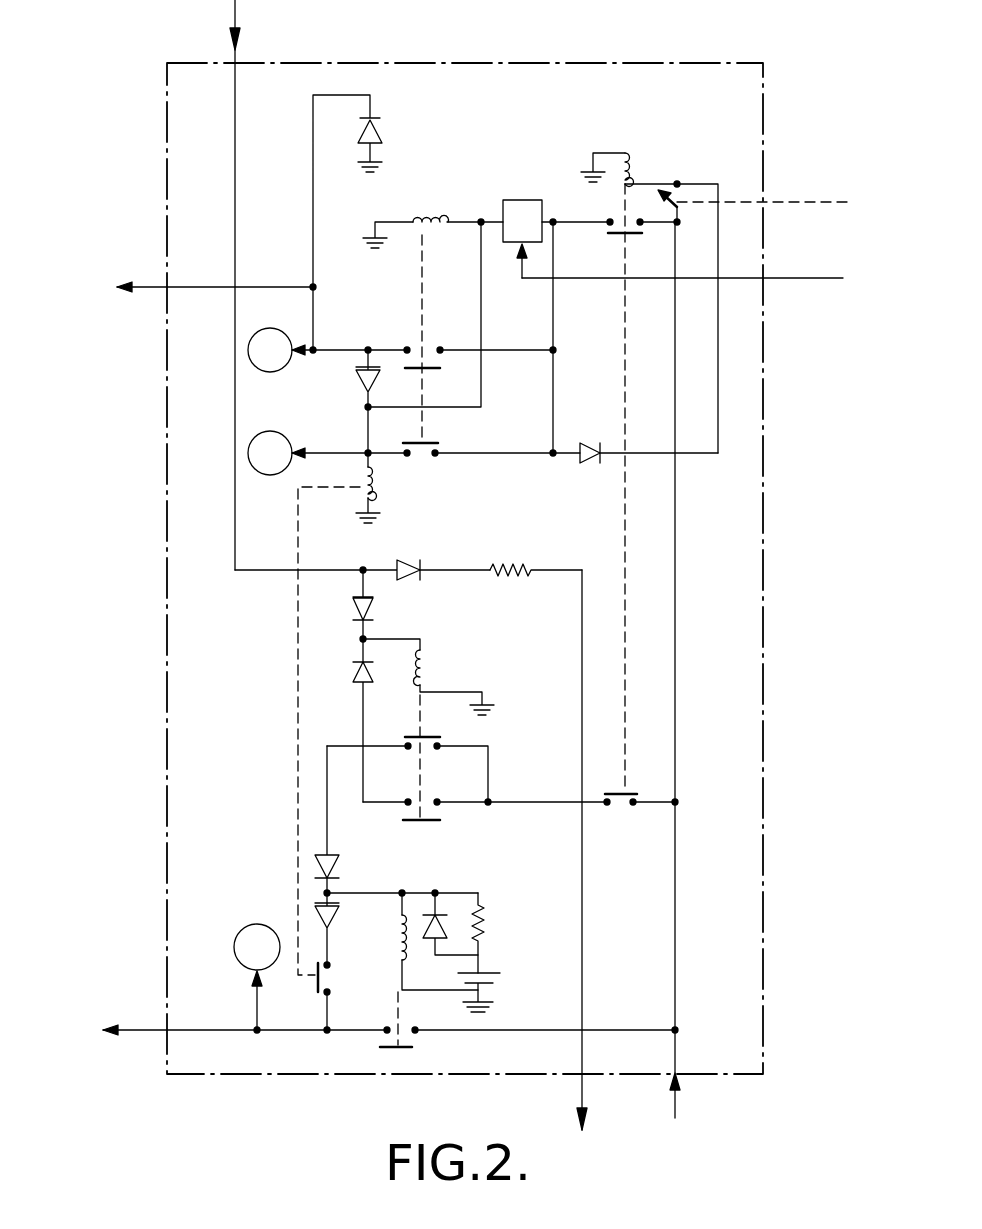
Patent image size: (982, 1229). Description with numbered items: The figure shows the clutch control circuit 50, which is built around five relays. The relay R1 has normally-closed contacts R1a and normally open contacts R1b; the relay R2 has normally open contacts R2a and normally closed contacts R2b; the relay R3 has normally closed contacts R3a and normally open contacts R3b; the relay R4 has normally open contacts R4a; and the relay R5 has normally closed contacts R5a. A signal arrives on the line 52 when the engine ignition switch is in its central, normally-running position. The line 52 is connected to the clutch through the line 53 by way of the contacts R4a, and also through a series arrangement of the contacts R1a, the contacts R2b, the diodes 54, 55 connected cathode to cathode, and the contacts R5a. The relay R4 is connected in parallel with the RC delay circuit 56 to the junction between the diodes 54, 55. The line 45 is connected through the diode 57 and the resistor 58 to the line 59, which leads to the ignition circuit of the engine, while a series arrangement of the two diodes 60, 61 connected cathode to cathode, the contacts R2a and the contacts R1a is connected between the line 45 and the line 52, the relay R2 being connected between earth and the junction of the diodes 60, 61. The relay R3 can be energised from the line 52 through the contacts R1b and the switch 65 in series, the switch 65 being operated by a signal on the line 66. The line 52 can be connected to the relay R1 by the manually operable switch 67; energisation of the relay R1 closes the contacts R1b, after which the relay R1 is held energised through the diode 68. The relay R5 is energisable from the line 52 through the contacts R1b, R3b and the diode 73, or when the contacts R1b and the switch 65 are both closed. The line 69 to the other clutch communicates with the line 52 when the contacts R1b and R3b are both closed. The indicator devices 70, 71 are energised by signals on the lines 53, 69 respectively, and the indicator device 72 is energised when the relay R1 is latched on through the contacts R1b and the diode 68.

The line 45 is at (235, 6).
The circuit 50 is at (715, 1020).
The line 52 is at (677, 930).
The line 53 is at (152, 1032).
The diode 54 is at (335, 862).
The diode 55 is at (318, 918).
The RC delay circuit 56 is at (483, 912).
The diode 57 is at (405, 567).
The resistor 58 is at (525, 577).
The line 59 is at (580, 1083).
The diode 60 is at (375, 604).
The diode 61 is at (355, 678).
The switch 65 is at (515, 218).
The line 66 is at (795, 280).
The manually operable switch 67 is at (680, 198).
The diode 68 is at (593, 462).
The line 69 is at (153, 290).
The indicator device 70 is at (250, 958).
The indicator device 71 is at (265, 352).
The indicator device 72 is at (270, 457).
The diode 73 is at (360, 380).
The relay R1 is at (634, 168).
The normally-closed contacts R1a is at (639, 816).
The normally open contacts R1b is at (610, 233).
The relay R2 is at (425, 676).
The normally open contacts R2a is at (430, 812).
The normally closed contacts R2b is at (443, 747).
The relay R3 is at (422, 220).
The normally closed contacts R3a is at (440, 449).
The normally open contacts R3b is at (413, 348).
The relay R4 is at (395, 932).
The normally open contacts R4a is at (410, 1035).
The relay R5 is at (375, 485).
The normally closed contacts R5a is at (350, 996).